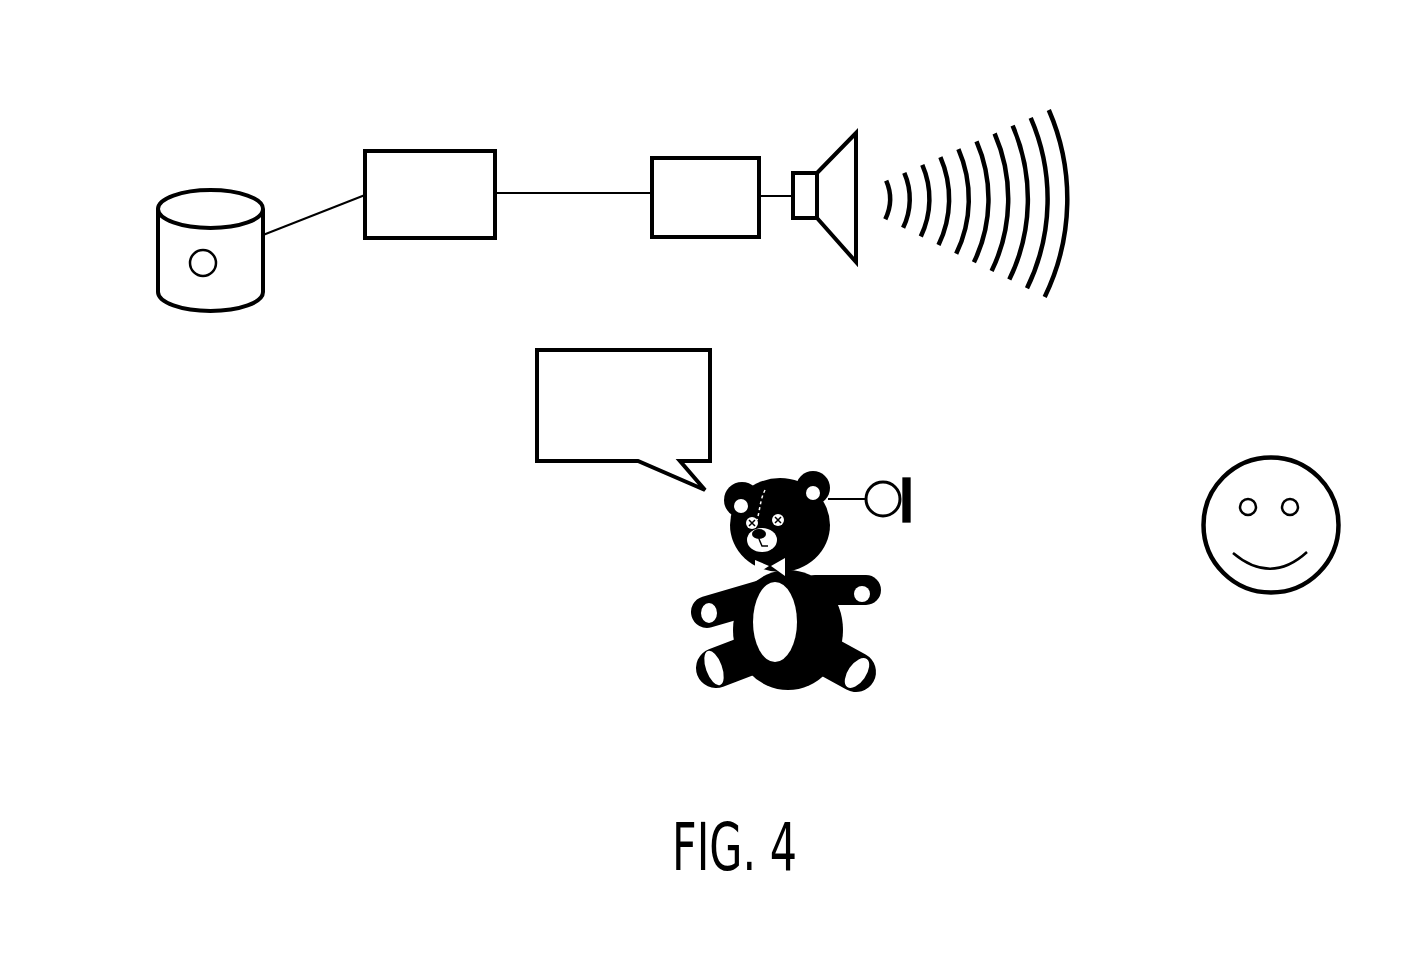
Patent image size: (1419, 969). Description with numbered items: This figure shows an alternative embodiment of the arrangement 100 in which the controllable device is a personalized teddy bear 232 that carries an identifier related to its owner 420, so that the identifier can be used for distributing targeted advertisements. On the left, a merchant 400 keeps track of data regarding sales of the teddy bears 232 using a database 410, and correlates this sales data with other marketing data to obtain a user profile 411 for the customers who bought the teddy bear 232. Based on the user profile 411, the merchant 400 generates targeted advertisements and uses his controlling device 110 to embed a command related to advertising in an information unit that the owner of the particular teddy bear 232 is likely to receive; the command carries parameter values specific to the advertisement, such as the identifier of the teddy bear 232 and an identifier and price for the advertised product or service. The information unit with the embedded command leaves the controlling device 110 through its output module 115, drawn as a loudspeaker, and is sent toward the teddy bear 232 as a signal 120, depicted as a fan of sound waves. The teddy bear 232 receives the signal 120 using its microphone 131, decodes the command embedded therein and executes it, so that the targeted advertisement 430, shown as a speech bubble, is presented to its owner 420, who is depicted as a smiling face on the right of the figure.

The arrangement 100 is at (1333, 138).
The database 410 is at (212, 188).
The user profile 411 is at (192, 262).
The merchant 400 is at (448, 152).
The controlling device 110 is at (706, 158).
The output module 115 is at (840, 163).
The signal 120 is at (1055, 270).
The targeted advertisement 430 is at (542, 387).
The teddy bear 232 is at (880, 652).
The microphone 131 is at (883, 483).
The owner 420 is at (1279, 458).